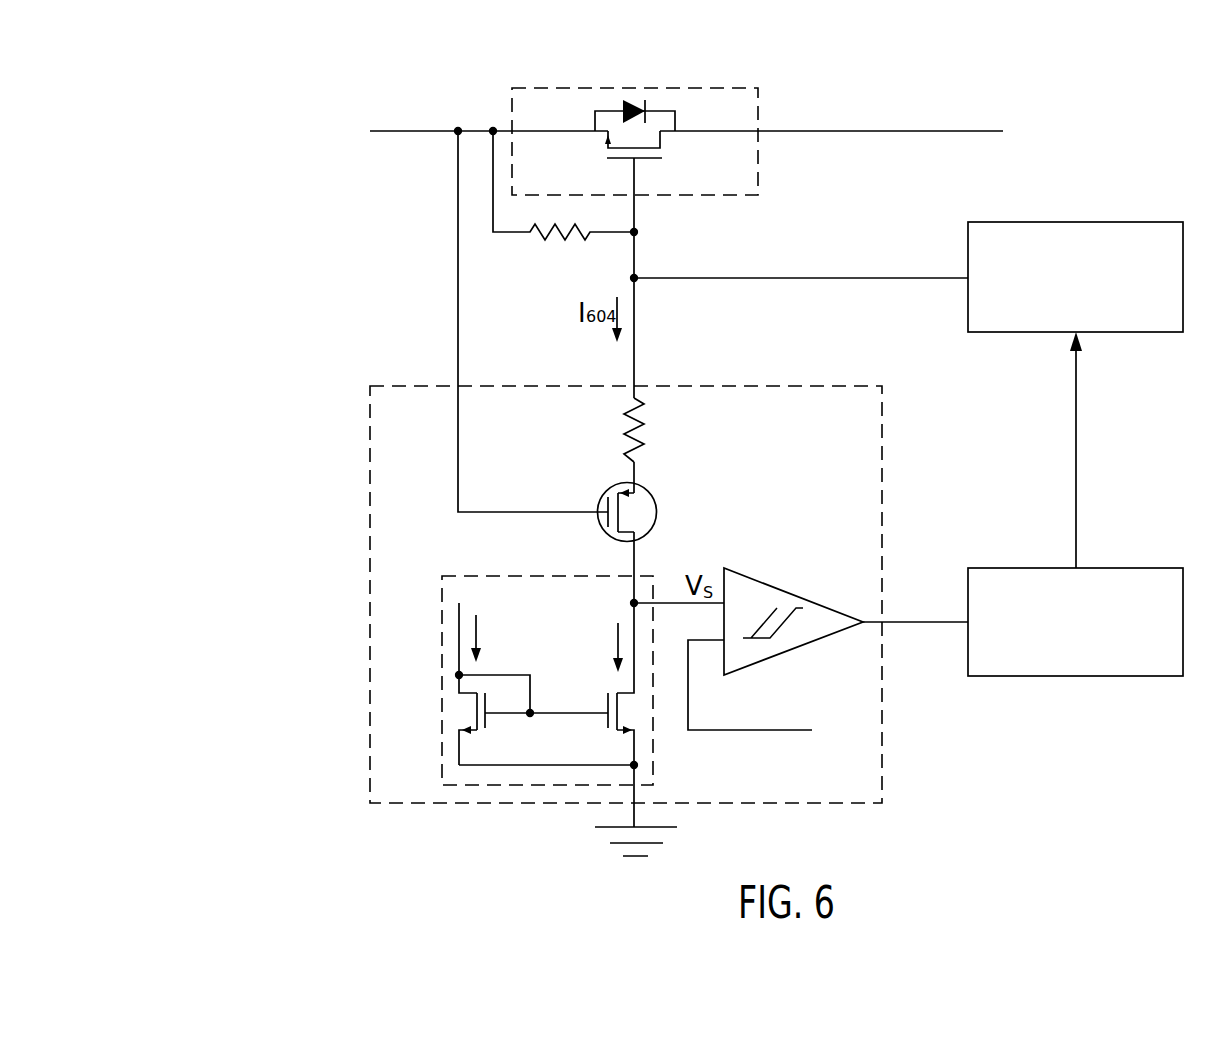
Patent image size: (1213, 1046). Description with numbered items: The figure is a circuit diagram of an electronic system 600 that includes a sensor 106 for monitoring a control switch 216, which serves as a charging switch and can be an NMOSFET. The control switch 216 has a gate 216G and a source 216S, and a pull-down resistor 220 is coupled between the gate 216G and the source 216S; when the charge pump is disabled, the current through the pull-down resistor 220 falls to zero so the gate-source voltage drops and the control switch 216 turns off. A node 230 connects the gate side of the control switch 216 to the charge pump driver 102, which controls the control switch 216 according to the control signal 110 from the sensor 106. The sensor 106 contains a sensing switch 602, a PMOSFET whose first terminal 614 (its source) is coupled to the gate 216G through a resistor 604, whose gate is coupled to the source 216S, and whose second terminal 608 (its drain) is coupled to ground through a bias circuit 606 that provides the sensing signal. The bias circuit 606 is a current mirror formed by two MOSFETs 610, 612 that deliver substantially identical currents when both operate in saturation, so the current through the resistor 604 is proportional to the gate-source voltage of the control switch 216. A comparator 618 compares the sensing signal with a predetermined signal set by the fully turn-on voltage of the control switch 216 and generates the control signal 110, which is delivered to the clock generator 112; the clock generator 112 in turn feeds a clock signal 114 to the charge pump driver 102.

The electronic system 600 is at (303, 114).
The control switch 216 is at (698, 197).
The source 216S is at (587, 131).
The gate 216G is at (647, 157).
The pull-down resistor 220 is at (564, 246).
The node 230 is at (748, 278).
The charge pump driver 102 is at (1058, 323).
The clock generator 112 is at (1058, 667).
The clock signal 114 is at (1058, 418).
The sensor 106 is at (370, 462).
The resistor 604 is at (620, 432).
The first terminal 614 is at (641, 470).
The sensing switch 602 is at (617, 487).
The second terminal 608 is at (640, 561).
The bias circuit 606 is at (442, 673).
The MOSFET 612 is at (487, 728).
The MOSFET 610 is at (607, 728).
The comparator 618 is at (768, 590).
The control signal 110 is at (908, 622).